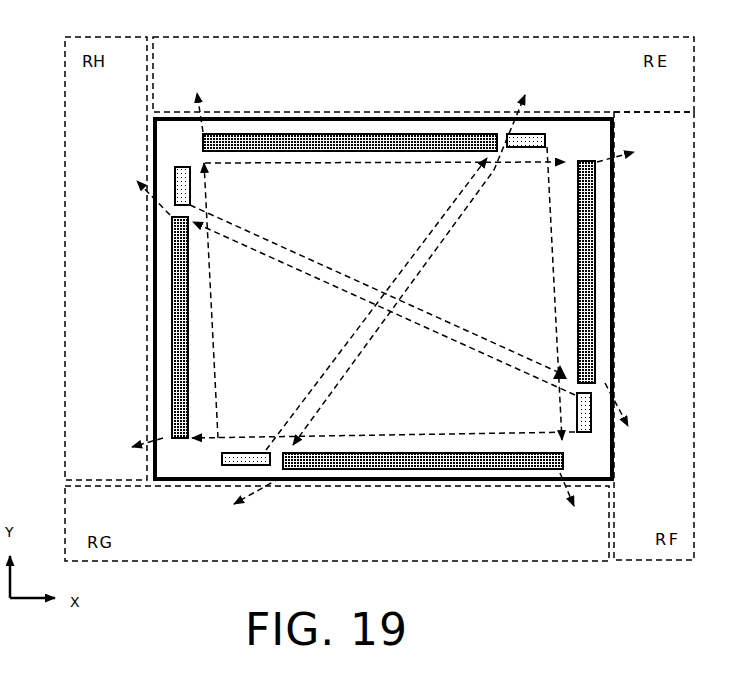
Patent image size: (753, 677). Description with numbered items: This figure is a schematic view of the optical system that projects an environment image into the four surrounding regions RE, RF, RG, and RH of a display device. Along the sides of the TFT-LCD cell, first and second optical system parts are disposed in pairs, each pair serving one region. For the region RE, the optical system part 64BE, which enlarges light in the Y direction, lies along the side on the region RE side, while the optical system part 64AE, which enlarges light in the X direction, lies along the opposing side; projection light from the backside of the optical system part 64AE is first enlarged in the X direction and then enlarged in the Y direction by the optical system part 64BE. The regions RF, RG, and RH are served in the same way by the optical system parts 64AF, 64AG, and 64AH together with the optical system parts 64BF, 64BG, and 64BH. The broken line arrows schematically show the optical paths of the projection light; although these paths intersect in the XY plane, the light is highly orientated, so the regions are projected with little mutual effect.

The optical system part 64BE is at (373, 135).
The optical system part 64AG is at (532, 133).
The optical system part 64BF is at (593, 275).
The optical system part 64AH is at (590, 420).
The optical system part 64BG is at (487, 470).
The optical system part 64AE is at (233, 459).
The optical system part 64BH is at (172, 323).
The optical system part 64AF is at (180, 175).